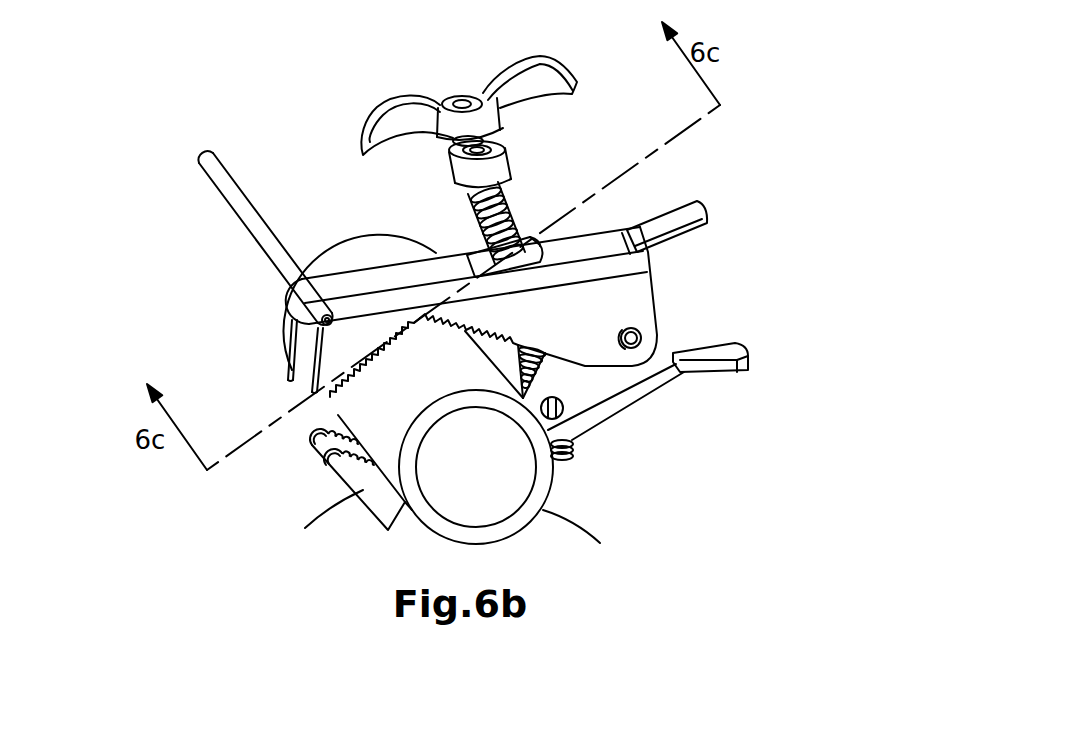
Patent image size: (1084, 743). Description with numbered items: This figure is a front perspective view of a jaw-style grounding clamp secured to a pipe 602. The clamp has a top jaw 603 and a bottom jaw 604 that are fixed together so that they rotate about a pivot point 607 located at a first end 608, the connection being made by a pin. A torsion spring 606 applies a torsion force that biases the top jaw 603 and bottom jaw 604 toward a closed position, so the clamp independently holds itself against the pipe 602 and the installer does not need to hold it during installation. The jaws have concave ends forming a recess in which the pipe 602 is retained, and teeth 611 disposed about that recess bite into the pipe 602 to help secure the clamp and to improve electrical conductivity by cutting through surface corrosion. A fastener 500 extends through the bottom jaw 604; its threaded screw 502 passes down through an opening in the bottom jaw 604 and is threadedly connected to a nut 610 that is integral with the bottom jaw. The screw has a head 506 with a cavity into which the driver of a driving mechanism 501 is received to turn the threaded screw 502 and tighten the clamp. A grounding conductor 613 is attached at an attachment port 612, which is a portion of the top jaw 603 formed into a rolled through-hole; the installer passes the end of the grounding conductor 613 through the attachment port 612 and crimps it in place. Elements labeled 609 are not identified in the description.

The fastener 500 is at (333, 120).
The driving mechanism 501 is at (540, 80).
The threaded screw 502 is at (478, 218).
The head 506 is at (497, 163).
The pipe 602 is at (540, 510).
The top jaw 603 is at (292, 362).
The bottom jaw 604 is at (362, 493).
The torsion spring 606 is at (636, 210).
The pivot point 607 is at (642, 335).
The first end 608 is at (720, 317).
The handle grips 609 is at (712, 226).
The nut 610 is at (562, 410).
The teeth 611 is at (460, 298).
The attachment port 612 is at (322, 318).
The grounding conductor 613 is at (230, 188).